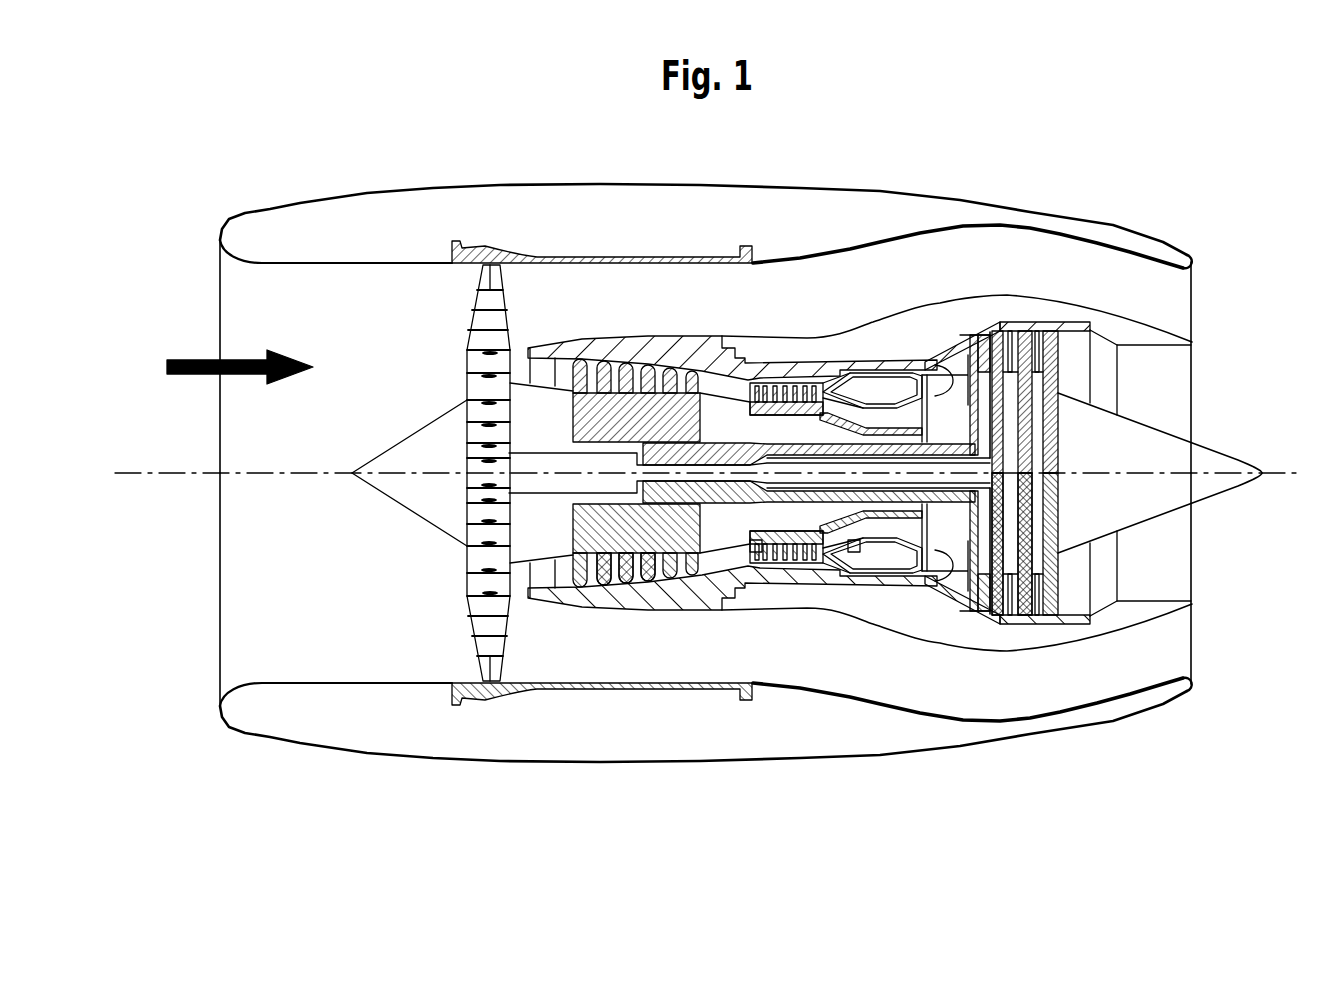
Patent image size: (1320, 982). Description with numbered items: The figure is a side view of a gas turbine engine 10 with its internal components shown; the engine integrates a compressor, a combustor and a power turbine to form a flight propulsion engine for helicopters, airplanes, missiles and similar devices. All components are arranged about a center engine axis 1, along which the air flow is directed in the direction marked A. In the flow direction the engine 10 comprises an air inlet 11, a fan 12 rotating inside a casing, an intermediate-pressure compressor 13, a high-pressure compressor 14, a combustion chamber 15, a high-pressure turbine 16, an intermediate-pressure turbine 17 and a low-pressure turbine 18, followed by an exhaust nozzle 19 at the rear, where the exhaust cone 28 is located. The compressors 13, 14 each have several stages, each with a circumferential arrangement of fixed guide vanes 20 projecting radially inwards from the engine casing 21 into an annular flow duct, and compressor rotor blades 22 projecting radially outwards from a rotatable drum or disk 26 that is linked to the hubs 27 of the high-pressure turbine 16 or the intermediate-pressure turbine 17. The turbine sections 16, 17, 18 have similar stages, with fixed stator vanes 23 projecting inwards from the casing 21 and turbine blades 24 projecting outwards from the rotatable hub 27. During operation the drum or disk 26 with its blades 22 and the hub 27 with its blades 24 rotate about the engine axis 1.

The center engine axis 1 is at (205, 478).
The airflow direction A is at (200, 363).
The gas turbine engine 10 is at (925, 246).
The air inlet 11 is at (396, 295).
The fan 12 is at (489, 292).
The intermediate-pressure compressor 13 is at (663, 372).
The high-pressure compressor 14 is at (808, 388).
The combustion chamber 15 is at (883, 383).
The high-pressure turbine 16 is at (953, 385).
The intermediate-pressure turbine 17 is at (950, 383).
The low-pressure turbine 18 is at (1067, 323).
The exhaust nozzle 19 is at (1107, 382).
The guide vanes 20 is at (592, 607).
The engine casing 21 is at (627, 607).
The compressor rotor blades 22 is at (668, 613).
The stator vanes 23 is at (983, 604).
The turbine blades 24 is at (1022, 615).
The drum or disk 26 is at (757, 552).
The hubs 27 is at (980, 537).
The exhaust cone 28 is at (1207, 460).